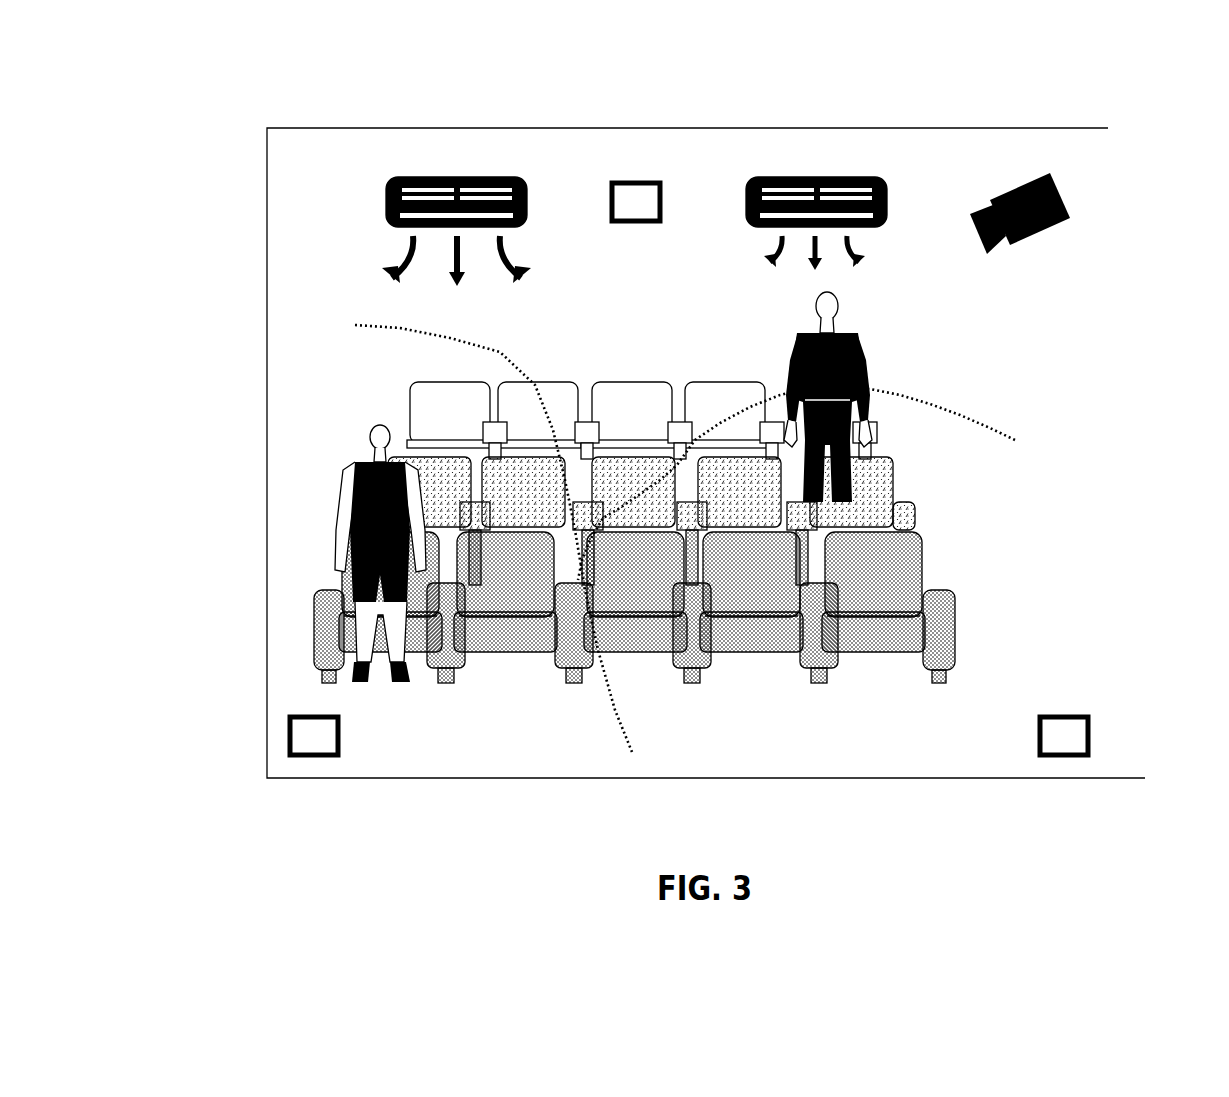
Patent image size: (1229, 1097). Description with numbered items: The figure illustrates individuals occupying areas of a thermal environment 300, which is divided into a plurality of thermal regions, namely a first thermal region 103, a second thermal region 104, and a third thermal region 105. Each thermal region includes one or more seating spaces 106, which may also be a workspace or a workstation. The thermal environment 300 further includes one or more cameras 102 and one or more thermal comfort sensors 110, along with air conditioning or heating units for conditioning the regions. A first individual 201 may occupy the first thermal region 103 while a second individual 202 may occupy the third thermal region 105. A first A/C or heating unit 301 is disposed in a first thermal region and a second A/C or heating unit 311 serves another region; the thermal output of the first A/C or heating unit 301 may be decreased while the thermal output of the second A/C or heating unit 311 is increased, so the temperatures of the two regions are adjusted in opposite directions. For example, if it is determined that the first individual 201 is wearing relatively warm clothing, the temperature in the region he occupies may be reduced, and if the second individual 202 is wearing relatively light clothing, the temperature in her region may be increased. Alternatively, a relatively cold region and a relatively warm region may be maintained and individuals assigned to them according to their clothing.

The thermal environment 300 is at (178, 49).
The first A/C or heating unit 301 is at (453, 176).
The second A/C or heating unit 311 is at (814, 176).
The thermal comfort sensor 110 is at (633, 181).
The camera 102 is at (1037, 172).
The first thermal region 103 is at (322, 402).
The second thermal region 104 is at (650, 335).
The third thermal region 105 is at (768, 715).
The seating space 106 is at (312, 618).
The first individual 201 is at (858, 342).
The second individual 202 is at (340, 495).